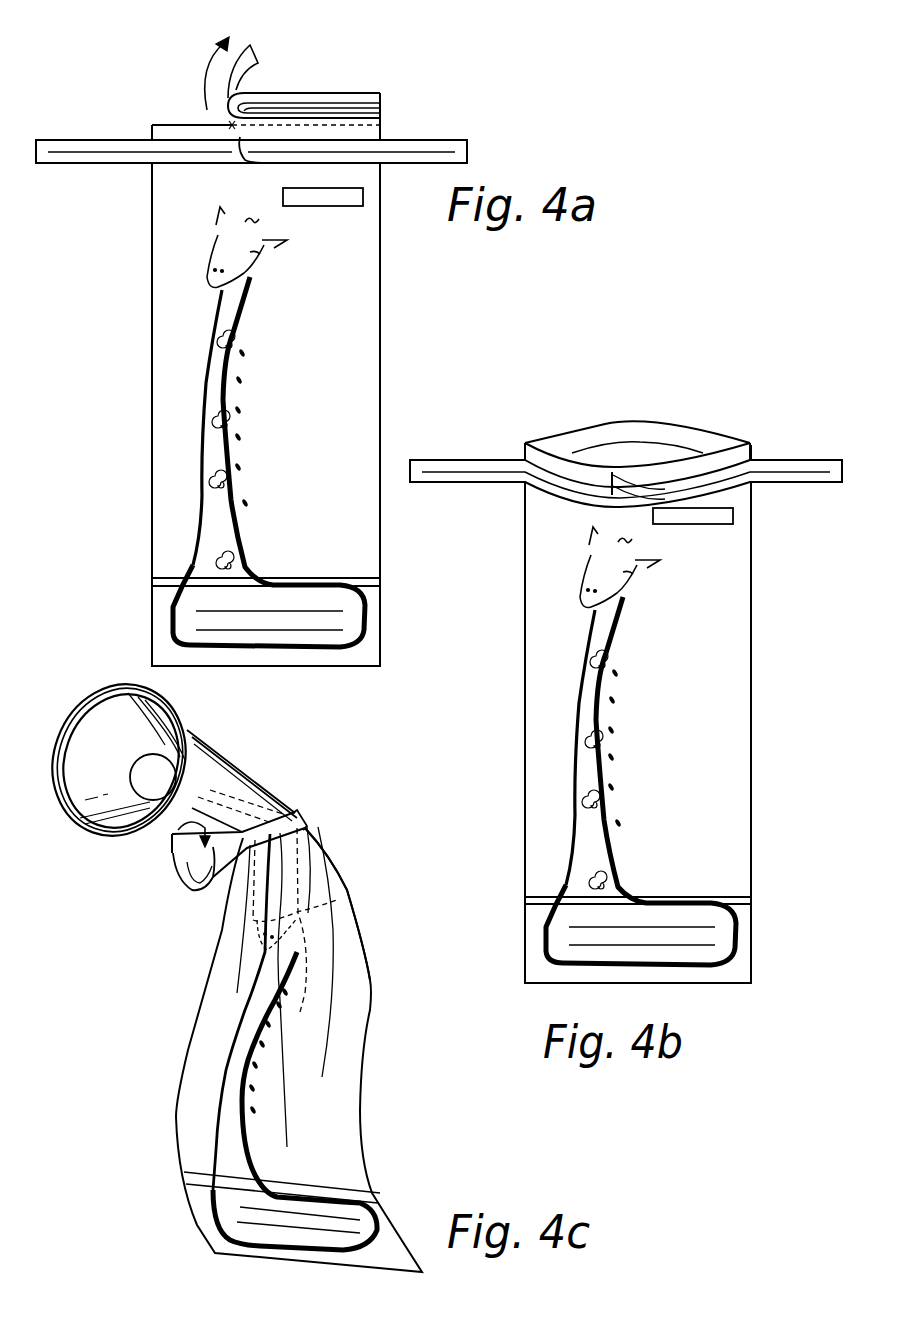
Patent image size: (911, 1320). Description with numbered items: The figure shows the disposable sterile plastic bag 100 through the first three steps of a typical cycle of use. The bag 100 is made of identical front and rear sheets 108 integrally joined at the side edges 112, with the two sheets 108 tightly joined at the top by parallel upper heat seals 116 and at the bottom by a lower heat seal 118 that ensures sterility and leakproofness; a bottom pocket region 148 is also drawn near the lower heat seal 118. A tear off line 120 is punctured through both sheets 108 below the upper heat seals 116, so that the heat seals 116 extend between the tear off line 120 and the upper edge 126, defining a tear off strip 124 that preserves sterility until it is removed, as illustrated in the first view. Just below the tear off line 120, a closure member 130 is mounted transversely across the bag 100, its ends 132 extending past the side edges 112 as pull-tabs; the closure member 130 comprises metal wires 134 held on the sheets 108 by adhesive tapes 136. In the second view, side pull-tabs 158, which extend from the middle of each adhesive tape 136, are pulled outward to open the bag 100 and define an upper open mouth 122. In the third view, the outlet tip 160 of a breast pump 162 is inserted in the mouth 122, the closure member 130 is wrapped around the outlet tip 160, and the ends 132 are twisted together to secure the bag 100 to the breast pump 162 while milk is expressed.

In FIG. 4A, the disposable sterile plastic bag 100 is at (432, 290).
In FIG. 4B, the disposable sterile plastic bag 100 is at (780, 632).
In FIG. 4C, the disposable sterile plastic bag 100 is at (176, 1055).
In FIG. 4A, the front and rear sheets 108 is at (210, 242).
In FIG. 4B, the front and rear sheets 108 is at (675, 714).
In FIG. 4C, the front and rear sheets 108 is at (340, 1080).
In FIG. 4A, the side edges 112 is at (229, 198).
In FIG. 4B, the side edges 112 is at (637, 734).
In FIG. 4C, the side edges 112 is at (372, 1010).
In FIG. 4A, the upper heat seal 116 is at (290, 105).
In FIG. 4A, the lower heat seal 118 is at (222, 594).
In FIG. 4B, the lower heat seal 118 is at (594, 875).
In FIG. 4A, the tear off line 120 is at (352, 125).
In FIG. 4B, the upper open mouth 122 is at (653, 455).
In FIG. 4A, the tear off strip 124 is at (237, 70).
In FIG. 4A, the upper edge 126 is at (343, 93).
In FIG. 4A, the closure member 130 is at (90, 138).
In FIG. 4B, the closure member 130 is at (463, 459).
In FIG. 4C, the closure member 130 is at (314, 820).
In FIG. 4A, the ends of the closure member 132 is at (438, 138).
In FIG. 4B, the ends of the closure member 132 is at (418, 482).
In FIG. 4C, the ends of the closure member 132 is at (192, 888).
In FIG. 4A, the metal strips or wires 134 is at (118, 152).
In FIG. 4A, the adhesive tapes 136 is at (357, 167).
In FIG. 4A, the bottom pocket 148 is at (181, 510).
In FIG. 4B, the bottom pocket 148 is at (662, 806).
In FIG. 4C, the bottom pocket 148 is at (232, 1215).
In FIG. 4B, the side pull-tabs 158 is at (620, 493).
In FIG. 4C, the outlet tip 160 is at (310, 912).
In FIG. 4C, the breast pump 162 is at (197, 734).